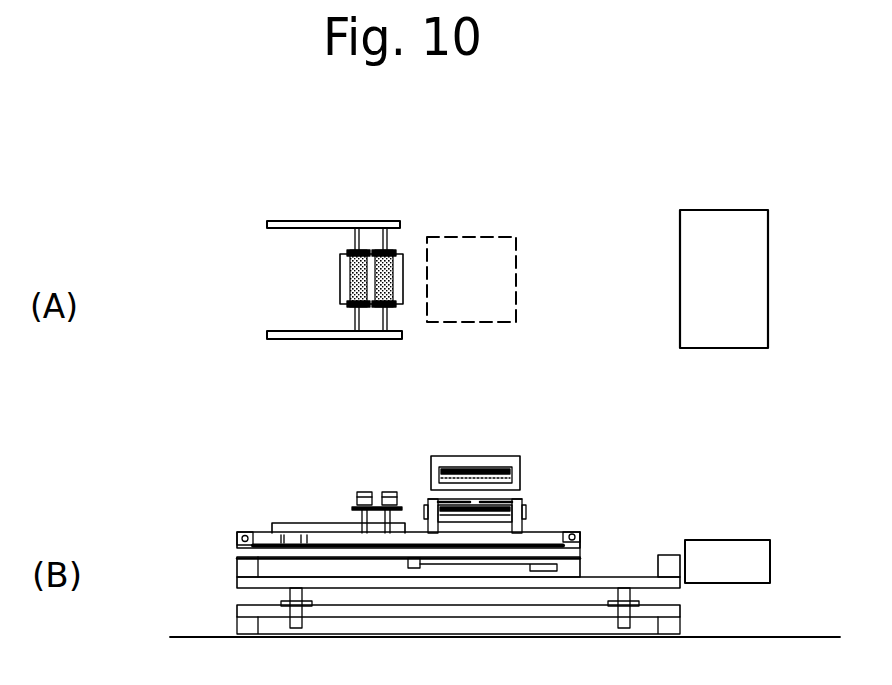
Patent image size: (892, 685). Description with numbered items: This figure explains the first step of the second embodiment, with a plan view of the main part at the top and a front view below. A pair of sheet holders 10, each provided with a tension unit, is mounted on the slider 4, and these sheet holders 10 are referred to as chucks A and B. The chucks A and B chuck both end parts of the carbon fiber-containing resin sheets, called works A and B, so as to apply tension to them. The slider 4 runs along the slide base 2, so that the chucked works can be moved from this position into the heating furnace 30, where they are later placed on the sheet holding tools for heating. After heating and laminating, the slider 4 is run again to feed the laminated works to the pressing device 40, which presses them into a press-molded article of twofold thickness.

The chuck A is at (348, 275).
The chuck B is at (392, 262).
The slider 4 is at (337, 222).
The heating furnace 30 is at (516, 289).
The sheet holder 10 is at (365, 492).
The slide base 2 is at (293, 548).
The pressing device 40 is at (727, 552).